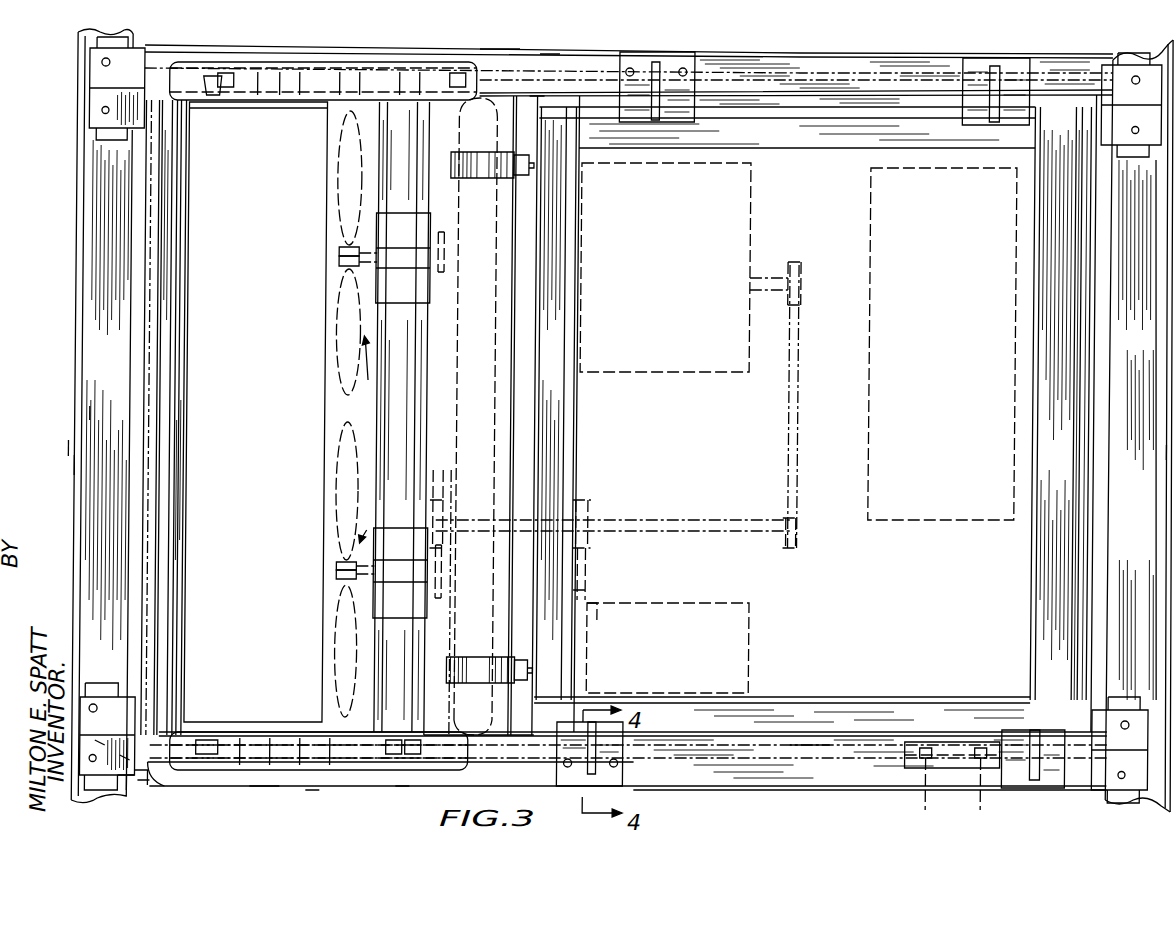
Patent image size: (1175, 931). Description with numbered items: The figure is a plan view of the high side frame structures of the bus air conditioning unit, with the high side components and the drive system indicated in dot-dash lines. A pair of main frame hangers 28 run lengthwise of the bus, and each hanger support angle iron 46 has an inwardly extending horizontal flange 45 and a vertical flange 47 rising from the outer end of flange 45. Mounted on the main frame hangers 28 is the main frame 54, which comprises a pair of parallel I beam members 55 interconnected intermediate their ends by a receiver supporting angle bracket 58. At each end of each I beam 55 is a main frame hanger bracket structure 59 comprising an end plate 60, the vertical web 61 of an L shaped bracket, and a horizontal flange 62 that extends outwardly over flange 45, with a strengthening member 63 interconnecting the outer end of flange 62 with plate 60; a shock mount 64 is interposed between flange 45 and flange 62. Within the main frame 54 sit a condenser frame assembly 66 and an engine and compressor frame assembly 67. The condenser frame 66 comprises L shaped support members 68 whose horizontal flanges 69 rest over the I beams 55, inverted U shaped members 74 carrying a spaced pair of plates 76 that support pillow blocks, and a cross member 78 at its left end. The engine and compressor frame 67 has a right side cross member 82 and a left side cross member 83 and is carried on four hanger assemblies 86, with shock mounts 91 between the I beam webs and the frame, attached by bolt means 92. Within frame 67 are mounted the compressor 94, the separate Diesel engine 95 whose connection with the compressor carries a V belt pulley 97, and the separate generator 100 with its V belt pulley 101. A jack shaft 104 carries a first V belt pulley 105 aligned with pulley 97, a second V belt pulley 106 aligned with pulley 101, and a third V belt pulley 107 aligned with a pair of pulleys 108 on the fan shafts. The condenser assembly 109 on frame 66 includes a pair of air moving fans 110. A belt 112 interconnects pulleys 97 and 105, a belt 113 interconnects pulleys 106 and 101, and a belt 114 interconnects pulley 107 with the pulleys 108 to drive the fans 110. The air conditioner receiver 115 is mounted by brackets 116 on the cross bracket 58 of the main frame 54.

The main frame hanger 28 is at (70, 276).
The horizontal flange 45 is at (93, 412).
The hanger support angle iron 46 is at (76, 448).
The vertical flange 47 is at (79, 465).
The main frame 54 is at (498, 49).
The I beam member 55 is at (550, 60).
The receiver supporting angle bracket 58 is at (534, 107).
The main frame hanger bracket structure 59 is at (134, 780).
The end plate 60 is at (154, 778).
The vertical web 61 is at (146, 782).
The horizontal flange 62 is at (130, 762).
The strengthening member 63 is at (108, 748).
The shock mount 64 is at (103, 683).
The condenser frame assembly 66 is at (269, 786).
The engine and compressor frame assembly 67 is at (815, 745).
The L shaped support member 68 is at (328, 62).
The horizontal flange 69 is at (319, 790).
The inverted U shaped member 74 is at (408, 690).
The plate 76 is at (410, 248).
The cross member 78 is at (184, 545).
The right side cross member 82 is at (1055, 125).
The left side cross member 83 is at (556, 130).
The hanger assembly 86 is at (659, 54).
The shock mount 91 is at (967, 750).
The mounting bolt 92 is at (948, 790).
The compressor 94 is at (673, 314).
The Diesel engine 95 is at (963, 222).
The V belt pulley 97 is at (805, 290).
The generator 100 is at (681, 690).
The V belt pulley 101 is at (608, 620).
The jack shaft 104 is at (717, 506).
The first V belt pulley 105 is at (805, 540).
The second V belt pulley 106 is at (593, 510).
The third V belt pulley 107 is at (451, 536).
The V belt pulley 108 is at (448, 245).
The condenser assembly 109 is at (272, 224).
The air moving fan 110 is at (346, 405).
The belt 112 is at (800, 403).
The belt 113 is at (591, 580).
The belt 114 is at (449, 480).
The air conditioner receiver 115 is at (501, 342).
The bracket 116 is at (487, 165).